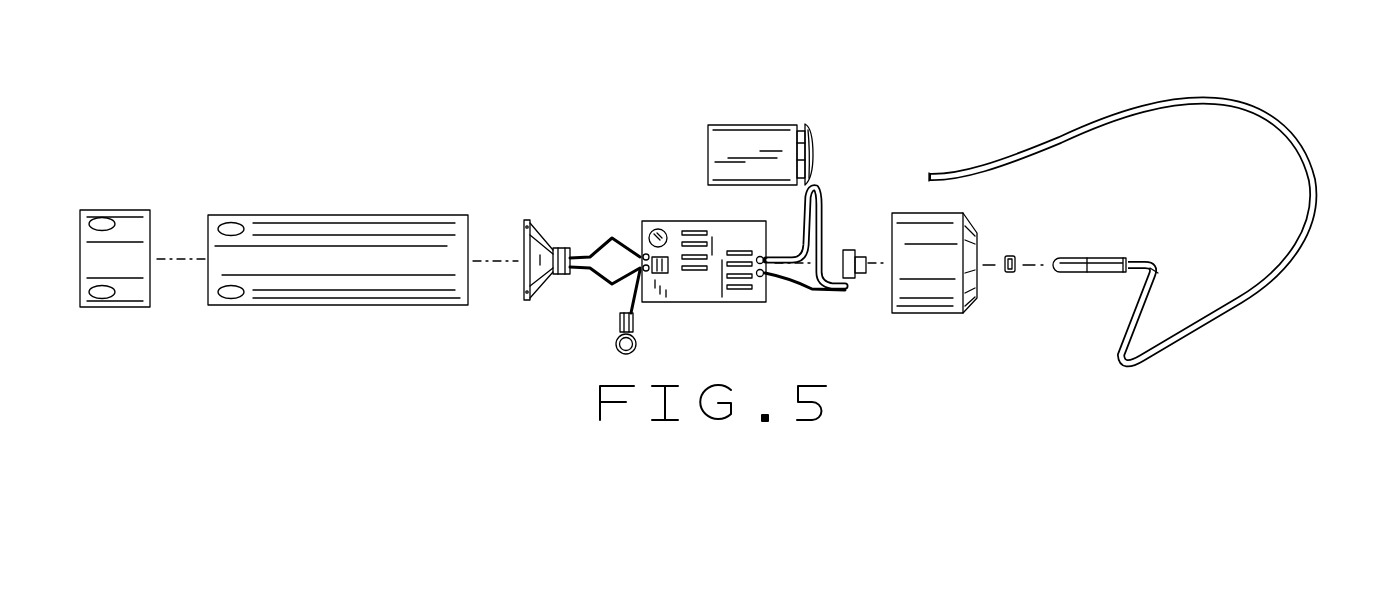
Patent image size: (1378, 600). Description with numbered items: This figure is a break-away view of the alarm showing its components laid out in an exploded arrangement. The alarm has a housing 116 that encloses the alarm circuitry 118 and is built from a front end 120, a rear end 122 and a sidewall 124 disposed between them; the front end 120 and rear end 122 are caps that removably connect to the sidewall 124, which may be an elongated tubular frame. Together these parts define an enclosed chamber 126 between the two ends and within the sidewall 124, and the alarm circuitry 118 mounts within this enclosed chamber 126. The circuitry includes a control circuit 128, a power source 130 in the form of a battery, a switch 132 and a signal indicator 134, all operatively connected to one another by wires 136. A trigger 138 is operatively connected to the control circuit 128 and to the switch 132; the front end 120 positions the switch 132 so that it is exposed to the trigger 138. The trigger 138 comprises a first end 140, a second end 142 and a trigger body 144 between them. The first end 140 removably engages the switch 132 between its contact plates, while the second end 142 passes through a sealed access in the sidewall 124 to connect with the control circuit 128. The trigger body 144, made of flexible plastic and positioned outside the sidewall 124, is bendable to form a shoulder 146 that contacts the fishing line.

The housing 116 is at (338, 251).
The alarm circuitry 118 is at (573, 129).
The front end 120 is at (932, 313).
The rear end 122 is at (128, 308).
The sidewall 124 is at (400, 250).
The enclosed chamber 126 is at (513, 248).
The control circuit 128 is at (721, 243).
The power source 130 is at (755, 122).
The switch 132 is at (822, 226).
The signal indicator 134 is at (548, 228).
The wires 136 is at (607, 232).
The trigger 138 is at (1139, 199).
The first end 140 is at (1088, 266).
The second end 142 is at (928, 172).
The trigger body 144 is at (1267, 115).
The shoulder 146 is at (1165, 273).